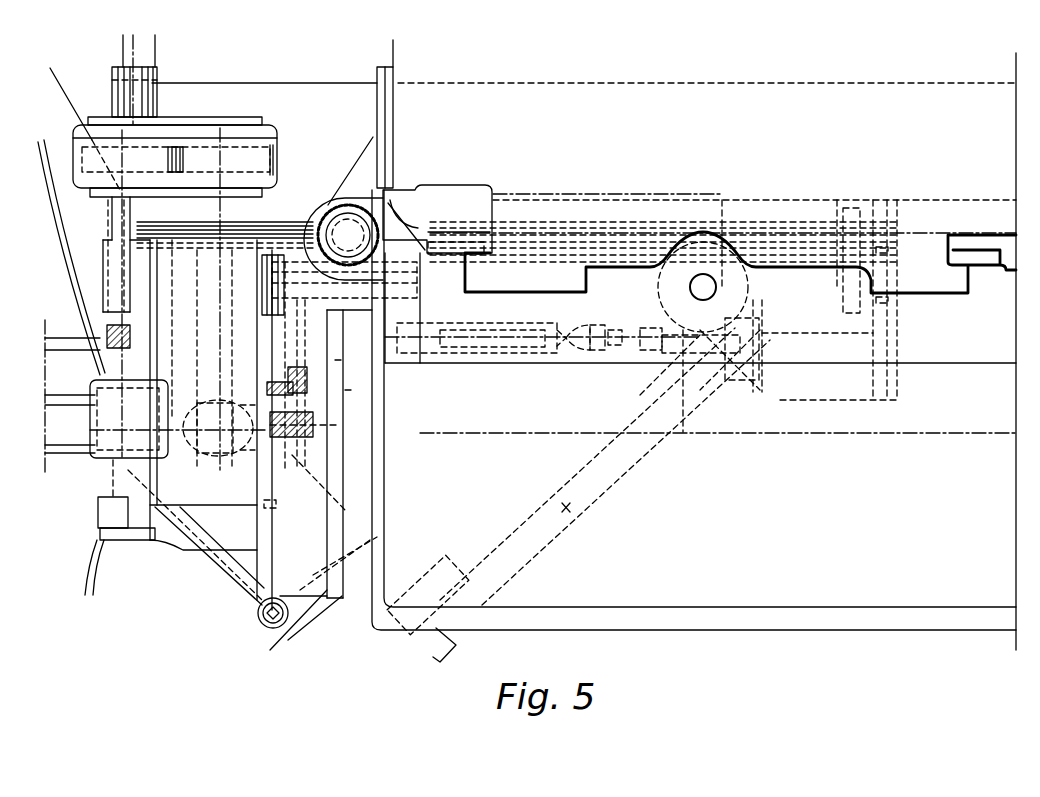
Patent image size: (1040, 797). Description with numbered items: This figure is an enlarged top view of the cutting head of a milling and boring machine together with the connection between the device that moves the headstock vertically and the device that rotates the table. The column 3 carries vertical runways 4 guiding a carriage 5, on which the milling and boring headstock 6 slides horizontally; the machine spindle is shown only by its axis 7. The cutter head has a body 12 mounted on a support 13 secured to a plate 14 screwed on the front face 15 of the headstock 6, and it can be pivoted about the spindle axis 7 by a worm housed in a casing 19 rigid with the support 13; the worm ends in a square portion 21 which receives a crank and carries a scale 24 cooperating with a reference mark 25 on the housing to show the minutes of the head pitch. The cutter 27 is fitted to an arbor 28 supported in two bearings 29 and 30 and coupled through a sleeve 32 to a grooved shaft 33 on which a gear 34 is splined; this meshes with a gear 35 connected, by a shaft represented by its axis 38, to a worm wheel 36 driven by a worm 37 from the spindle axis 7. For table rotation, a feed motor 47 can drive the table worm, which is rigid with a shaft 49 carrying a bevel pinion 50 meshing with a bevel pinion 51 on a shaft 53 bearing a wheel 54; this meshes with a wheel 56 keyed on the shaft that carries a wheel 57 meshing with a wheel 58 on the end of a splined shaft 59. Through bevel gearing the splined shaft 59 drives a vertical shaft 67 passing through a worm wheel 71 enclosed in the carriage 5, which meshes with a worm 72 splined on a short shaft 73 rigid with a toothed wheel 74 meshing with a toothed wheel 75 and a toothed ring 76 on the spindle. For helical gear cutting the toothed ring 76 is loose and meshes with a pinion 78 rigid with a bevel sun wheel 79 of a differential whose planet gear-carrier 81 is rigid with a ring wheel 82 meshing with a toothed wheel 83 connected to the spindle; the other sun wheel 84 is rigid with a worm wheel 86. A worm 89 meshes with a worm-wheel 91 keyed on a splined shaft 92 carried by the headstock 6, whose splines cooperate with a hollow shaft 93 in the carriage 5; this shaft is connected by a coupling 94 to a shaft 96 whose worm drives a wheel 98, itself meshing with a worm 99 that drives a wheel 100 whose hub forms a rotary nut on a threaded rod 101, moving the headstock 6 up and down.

The column 3 is at (988, 182).
The vertical runways 4 is at (555, 292).
The carriage 5 is at (1000, 327).
The milling and boring headstock 6 is at (946, 625).
The machine spindle axis 7 is at (517, 433).
The cutter head body 12 is at (198, 280).
The support 13 is at (326, 597).
The plate 14 is at (373, 627).
The front face 15 is at (366, 615).
The casing 19 is at (258, 610).
The square portion 21 is at (265, 626).
The scale 24 is at (262, 616).
The reference mark 25 is at (284, 640).
The cutter 27 is at (128, 451).
The arbor 28 is at (104, 352).
The bearing 29 is at (100, 517).
The bearing 30 is at (105, 284).
The sleeve 32 is at (108, 330).
The grooved shaft 33 is at (116, 97).
The gear 34 is at (152, 158).
The gear 35 is at (278, 153).
The worm wheel 36 is at (188, 415).
The worm 37 is at (212, 456).
The shaft axis 38 is at (232, 315).
The feed motor 47 is at (220, 555).
The shaft 49 is at (605, 466).
The bevel pinion 50 is at (760, 395).
The bevel pinion 51 is at (764, 316).
The shaft 53 is at (813, 333).
The wheel 54 is at (890, 313).
The wheel 56 is at (880, 265).
The wheel 57 is at (857, 247).
The wheel 58 is at (852, 210).
The splined shaft 59 is at (767, 227).
The vertical shaft 67 is at (355, 225).
The worm wheel 71 is at (345, 212).
The worm 72 is at (412, 273).
The short shaft 73 is at (405, 284).
The toothed wheel 74 is at (262, 264).
The toothed wheel 75 is at (268, 332).
The toothed ring 76 is at (266, 508).
The pinion 78 is at (252, 440).
The bevel sun wheel 79 is at (314, 428).
The planet gear-carrier 81 is at (318, 426).
The ring wheel 82 is at (300, 368).
The toothed wheel 83 is at (312, 457).
The sun wheel 84 is at (300, 428).
The worm wheel 86 is at (352, 390).
The worm 89 is at (345, 360).
The worm-wheel 91 is at (325, 340).
The shaft 92 is at (431, 338).
The hollow shaft 93 is at (483, 323).
The coupling 94 is at (605, 351).
The shaft 96 is at (654, 352).
The wheel 98 is at (660, 378).
The worm 99 is at (683, 385).
The wheel 100 is at (660, 288).
The threaded rod 101 is at (692, 293).